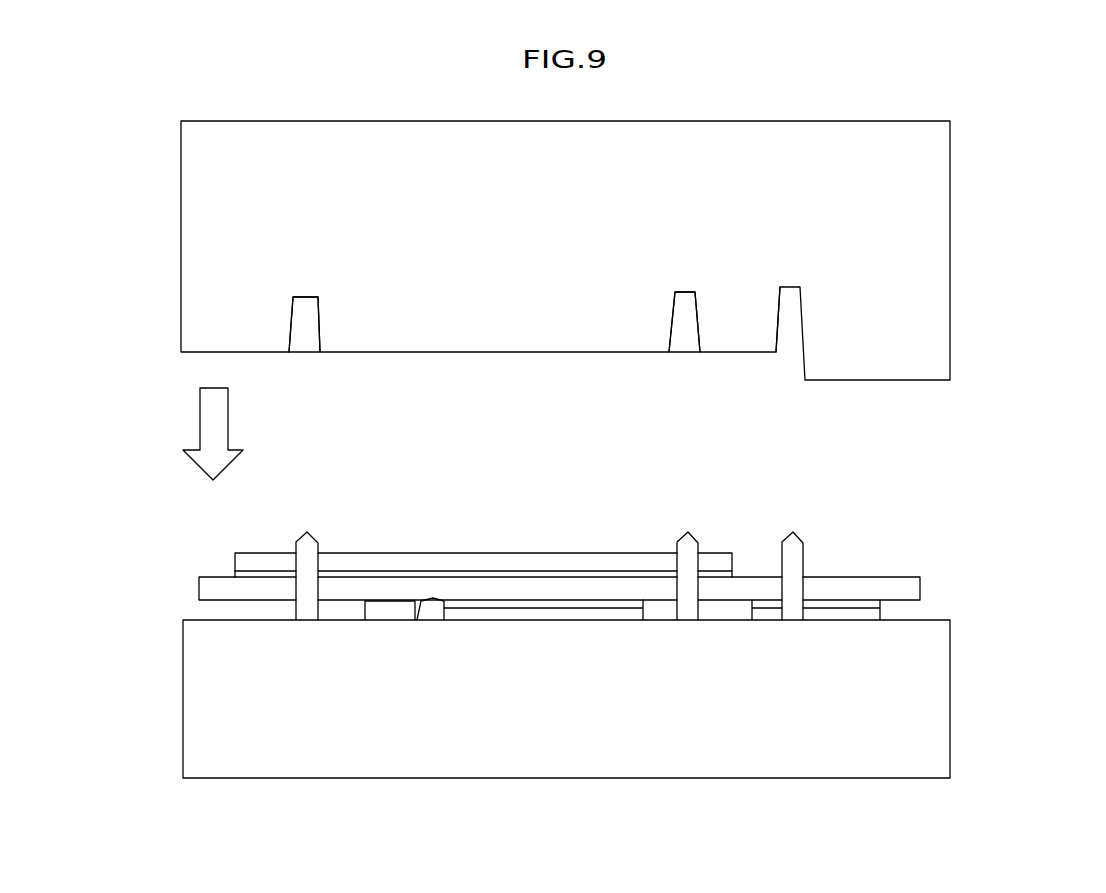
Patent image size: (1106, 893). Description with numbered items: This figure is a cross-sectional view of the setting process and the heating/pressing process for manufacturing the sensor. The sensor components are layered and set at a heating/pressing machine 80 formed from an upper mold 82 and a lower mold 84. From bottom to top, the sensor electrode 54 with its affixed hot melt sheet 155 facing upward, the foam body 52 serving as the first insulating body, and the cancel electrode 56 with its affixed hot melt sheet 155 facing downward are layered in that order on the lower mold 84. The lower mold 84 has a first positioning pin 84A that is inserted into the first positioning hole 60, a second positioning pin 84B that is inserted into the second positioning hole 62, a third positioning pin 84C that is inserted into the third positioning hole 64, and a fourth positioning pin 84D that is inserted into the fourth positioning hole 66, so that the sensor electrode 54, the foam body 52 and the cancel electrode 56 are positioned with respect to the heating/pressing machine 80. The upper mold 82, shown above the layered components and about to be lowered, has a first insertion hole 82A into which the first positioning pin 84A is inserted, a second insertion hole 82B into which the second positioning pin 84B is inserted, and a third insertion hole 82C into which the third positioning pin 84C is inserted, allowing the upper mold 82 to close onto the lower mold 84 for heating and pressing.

The heating/pressing machine 80 is at (630, 449).
The upper mold 82 is at (940, 247).
The first insertion hole 82A is at (697, 335).
The second insertion hole 82B is at (317, 335).
The third insertion hole 82C is at (800, 345).
The lower mold 84 is at (942, 695).
The first positioning pin 84A is at (688, 533).
The second positioning pin 84B is at (307, 533).
The third positioning pin 84C is at (793, 533).
The fourth positioning pin 84D is at (433, 600).
The foam body 52 is at (213, 590).
The sensor electrode 54 is at (877, 615).
The cancel electrode 56 is at (273, 563).
The first positioning hole 60 is at (695, 566).
The second positioning hole 62 is at (314, 568).
The third positioning hole 64 is at (802, 590).
The fourth positioning hole 66 is at (442, 610).
The hot melt sheet 155 is at (250, 573).